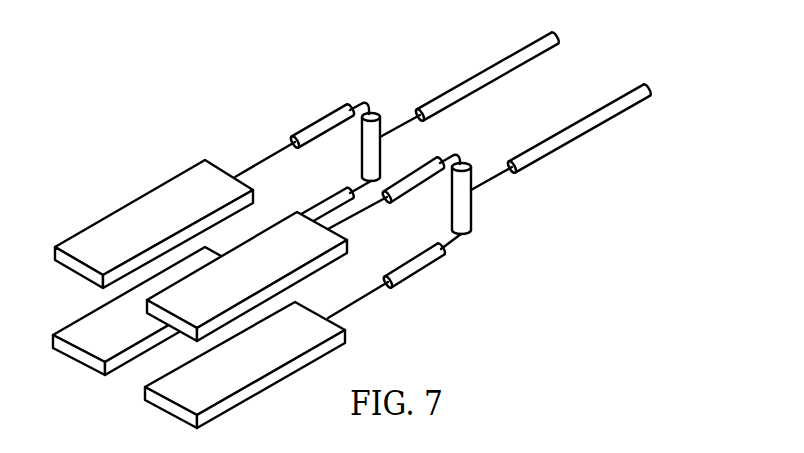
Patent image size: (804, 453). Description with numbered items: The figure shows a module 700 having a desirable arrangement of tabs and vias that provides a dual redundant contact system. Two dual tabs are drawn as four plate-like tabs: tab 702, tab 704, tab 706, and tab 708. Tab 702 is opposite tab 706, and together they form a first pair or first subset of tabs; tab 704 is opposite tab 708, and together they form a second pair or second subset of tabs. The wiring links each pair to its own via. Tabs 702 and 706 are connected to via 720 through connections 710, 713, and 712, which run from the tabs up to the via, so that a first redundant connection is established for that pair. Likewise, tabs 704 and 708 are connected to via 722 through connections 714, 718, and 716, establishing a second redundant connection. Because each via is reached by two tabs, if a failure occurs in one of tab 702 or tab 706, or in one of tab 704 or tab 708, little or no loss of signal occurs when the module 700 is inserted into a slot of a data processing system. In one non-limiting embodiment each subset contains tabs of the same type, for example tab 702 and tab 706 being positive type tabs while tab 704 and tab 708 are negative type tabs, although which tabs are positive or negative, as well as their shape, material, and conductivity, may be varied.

The module 700 is at (166, 114).
The tab 702 is at (174, 229).
The tab 704 is at (264, 284).
The tab 706 is at (130, 341).
The tab 708 is at (264, 371).
The connection 710 is at (320, 116).
The connection 712 is at (380, 113).
The connection 713 is at (321, 197).
The connection 714 is at (420, 196).
The connection 716 is at (473, 205).
The connection 718 is at (418, 279).
The via 720 is at (483, 66).
The via 722 is at (587, 138).